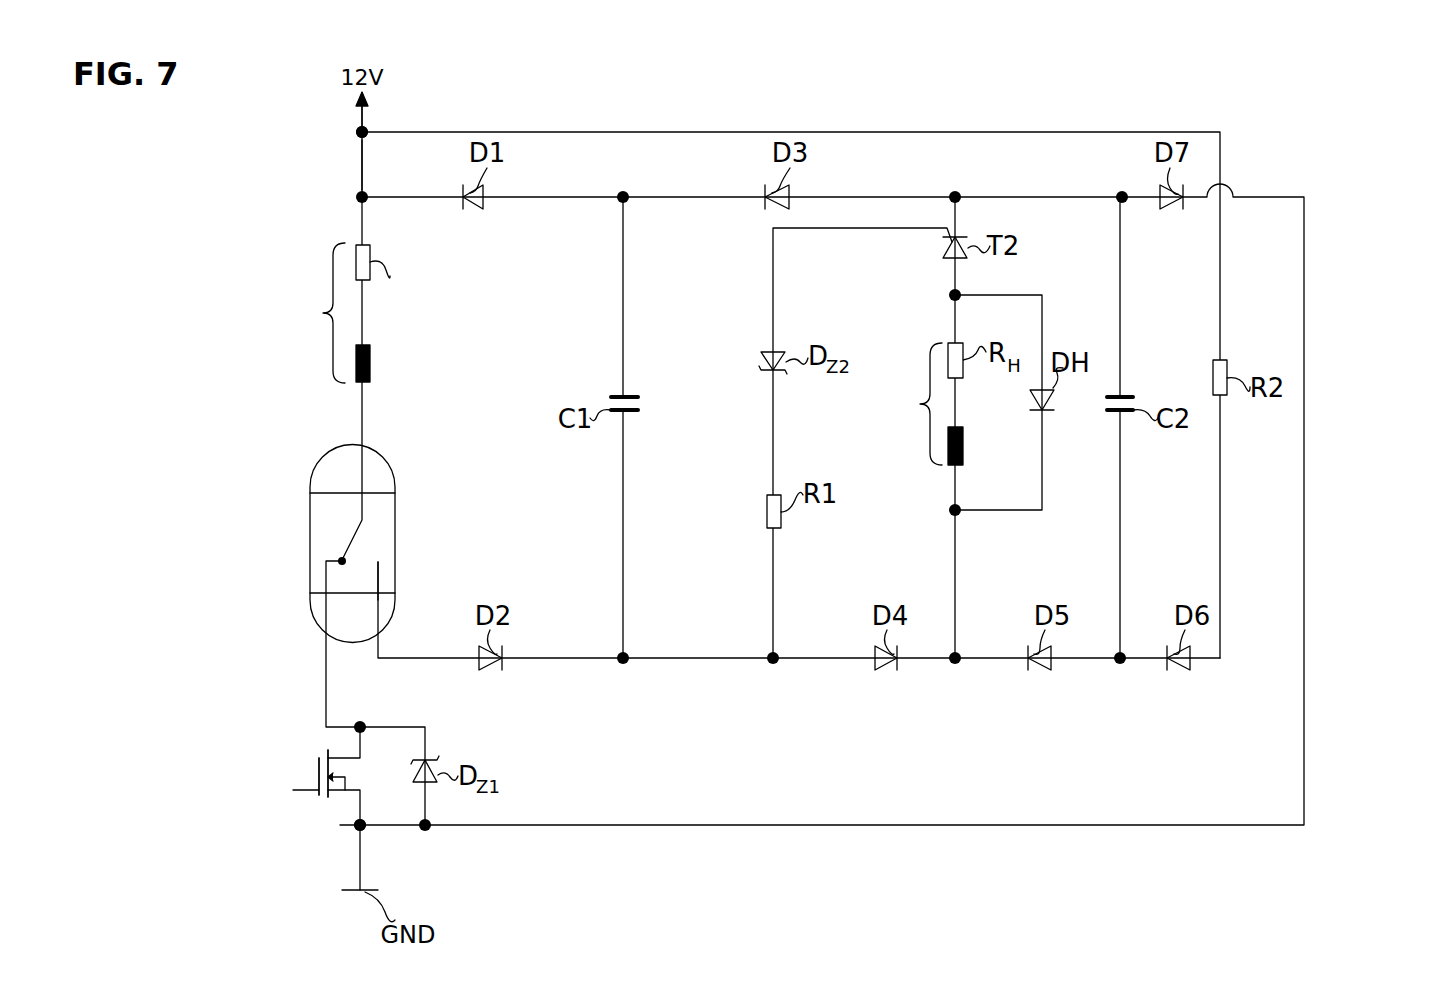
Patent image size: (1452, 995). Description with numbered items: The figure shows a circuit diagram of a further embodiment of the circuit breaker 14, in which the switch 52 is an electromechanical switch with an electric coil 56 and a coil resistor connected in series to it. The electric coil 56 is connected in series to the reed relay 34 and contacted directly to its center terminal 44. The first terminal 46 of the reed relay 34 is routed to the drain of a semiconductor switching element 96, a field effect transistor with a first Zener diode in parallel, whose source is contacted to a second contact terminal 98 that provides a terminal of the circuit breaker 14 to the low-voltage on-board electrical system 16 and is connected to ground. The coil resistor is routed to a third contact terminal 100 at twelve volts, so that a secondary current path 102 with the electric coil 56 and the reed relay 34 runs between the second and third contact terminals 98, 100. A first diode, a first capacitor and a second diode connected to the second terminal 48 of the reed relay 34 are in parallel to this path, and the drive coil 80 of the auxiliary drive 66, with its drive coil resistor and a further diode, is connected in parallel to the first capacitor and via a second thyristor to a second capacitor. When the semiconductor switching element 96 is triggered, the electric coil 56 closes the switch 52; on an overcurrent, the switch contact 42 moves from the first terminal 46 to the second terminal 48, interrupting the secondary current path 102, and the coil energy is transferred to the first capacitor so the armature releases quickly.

The circuit breaker 14 is at (1343, 160).
The low-voltage on-board electrical system 16 is at (362, 118).
The reed relay 34 is at (310, 537).
The switch contact 42 is at (348, 553).
The center terminal 44 is at (362, 479).
The first terminal 46 is at (325, 605).
The second terminal 48 is at (372, 612).
The switch 52 is at (322, 313).
The electric coil 56 is at (370, 372).
The auxiliary drive 66 is at (920, 404).
The drive coil 80 is at (963, 448).
The semiconductor switching element 96 is at (318, 805).
The second contact terminal 98 is at (360, 829).
The third contact terminal 100 is at (362, 126).
The secondary current path 102 is at (362, 168).